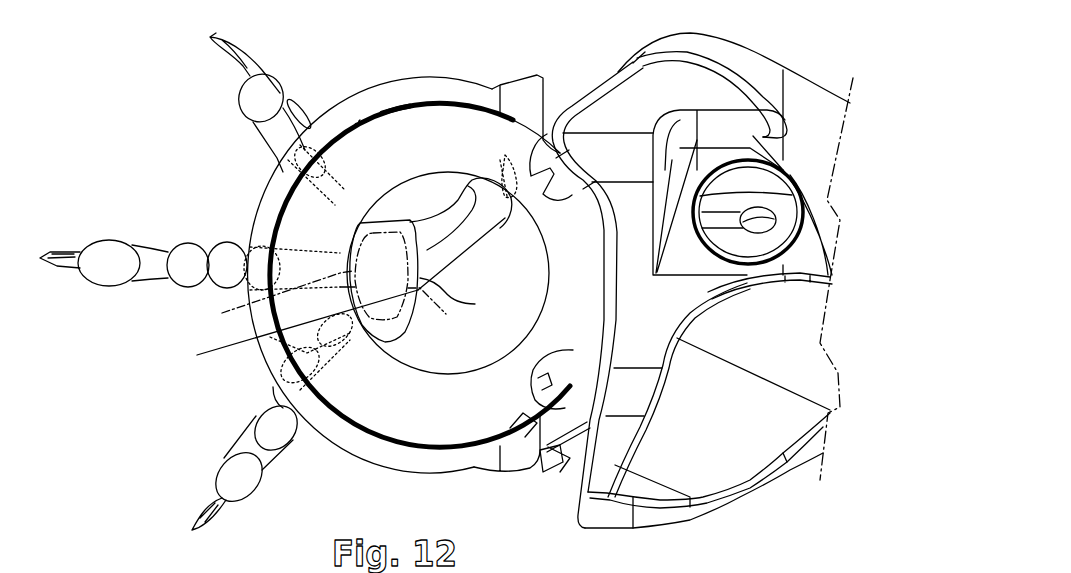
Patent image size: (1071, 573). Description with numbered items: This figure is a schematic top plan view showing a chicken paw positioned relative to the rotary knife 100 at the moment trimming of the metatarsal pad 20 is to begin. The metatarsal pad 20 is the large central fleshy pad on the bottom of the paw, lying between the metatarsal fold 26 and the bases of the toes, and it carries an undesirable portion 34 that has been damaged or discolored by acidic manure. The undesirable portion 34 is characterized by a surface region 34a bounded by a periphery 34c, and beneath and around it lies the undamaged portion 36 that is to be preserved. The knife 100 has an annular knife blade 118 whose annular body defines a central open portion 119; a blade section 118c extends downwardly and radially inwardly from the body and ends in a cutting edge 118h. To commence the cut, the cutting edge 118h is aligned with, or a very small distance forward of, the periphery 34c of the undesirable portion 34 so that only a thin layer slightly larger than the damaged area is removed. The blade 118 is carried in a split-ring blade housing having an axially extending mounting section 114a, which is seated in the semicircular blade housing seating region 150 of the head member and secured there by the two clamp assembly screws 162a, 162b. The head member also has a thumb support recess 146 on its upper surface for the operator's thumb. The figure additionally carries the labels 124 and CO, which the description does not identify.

The rotary knife 100 is at (778, 32).
The mounting section 114a is at (548, 458).
The annular knife blade 118 is at (275, 219).
The blade section 118c is at (463, 142).
The cutting edge 118h is at (397, 143).
The central open portion 119 is at (478, 468).
The wall 124 is at (604, 55).
The thumb support recess 146 is at (778, 357).
The blade housing seating region 150 is at (622, 336).
The first clamp assembly screw 162a is at (563, 360).
The second clamp assembly screw 162b is at (563, 196).
The metatarsal pad 20 is at (345, 233).
The metatarsal fold 26 is at (462, 296).
The undesirable portion 34 is at (375, 308).
The surface region 34a is at (390, 302).
The periphery 34c is at (333, 287).
The undamaged portion 36 is at (411, 224).
The center axis CO is at (286, 331).